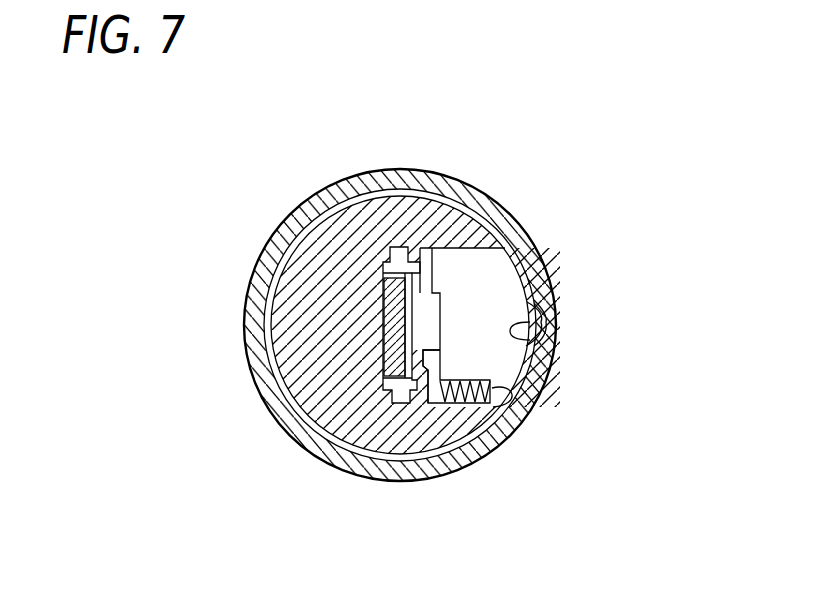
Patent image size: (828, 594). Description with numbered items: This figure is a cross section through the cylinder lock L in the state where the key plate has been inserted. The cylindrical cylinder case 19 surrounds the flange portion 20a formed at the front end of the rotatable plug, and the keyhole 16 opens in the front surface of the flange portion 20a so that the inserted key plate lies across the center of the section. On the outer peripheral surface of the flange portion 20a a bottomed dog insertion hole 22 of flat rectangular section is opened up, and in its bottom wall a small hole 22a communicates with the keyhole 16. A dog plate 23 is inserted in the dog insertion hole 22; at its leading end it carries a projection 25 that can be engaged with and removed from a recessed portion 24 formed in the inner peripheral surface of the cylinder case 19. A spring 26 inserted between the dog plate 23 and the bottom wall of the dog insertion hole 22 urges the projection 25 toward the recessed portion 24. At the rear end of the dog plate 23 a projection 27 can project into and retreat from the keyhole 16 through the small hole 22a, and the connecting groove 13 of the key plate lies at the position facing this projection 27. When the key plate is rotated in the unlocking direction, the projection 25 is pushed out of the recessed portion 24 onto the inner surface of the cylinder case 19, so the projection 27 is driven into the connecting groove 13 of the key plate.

The cylinder lock L is at (512, 177).
The connecting groove 13 is at (397, 334).
The keyhole 16 is at (385, 380).
The cylinder case 19 is at (328, 197).
The flange portion 20a is at (442, 432).
The dog insertion hole 22 is at (558, 334).
The small hole 22a is at (428, 352).
The dog plate 23 is at (497, 268).
The recessed portion 24 is at (541, 313).
The projection 25 is at (530, 343).
The spring 26 is at (501, 433).
The projection 27 is at (536, 283).